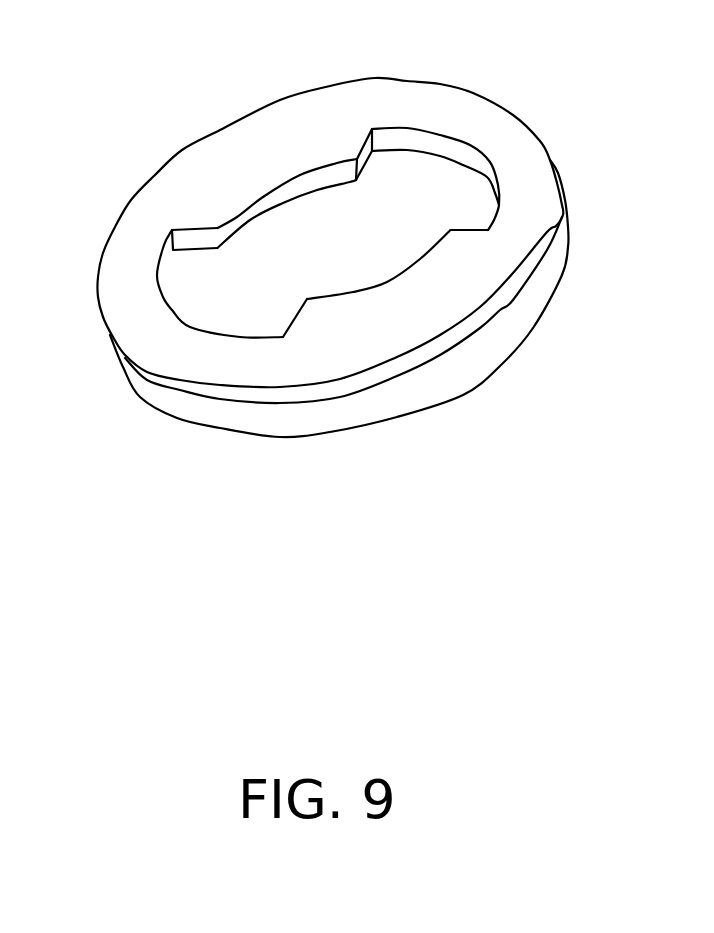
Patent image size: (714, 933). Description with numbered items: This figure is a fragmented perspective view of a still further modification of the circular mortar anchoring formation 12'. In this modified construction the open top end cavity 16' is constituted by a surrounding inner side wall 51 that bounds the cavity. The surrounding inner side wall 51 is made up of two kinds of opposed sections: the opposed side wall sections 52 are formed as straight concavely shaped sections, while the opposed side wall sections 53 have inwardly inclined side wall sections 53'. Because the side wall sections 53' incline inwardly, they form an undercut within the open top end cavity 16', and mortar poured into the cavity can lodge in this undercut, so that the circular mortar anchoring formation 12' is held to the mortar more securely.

The circular mortar anchoring formation 12' is at (352, 233).
The open top end cavity 16' is at (292, 126).
The surrounding inner side wall 51 is at (230, 218).
The opposed side wall sections 52 is at (263, 182).
The opposed side wall sections 53 is at (278, 222).
The inwardly inclined side wall sections 53' is at (420, 117).